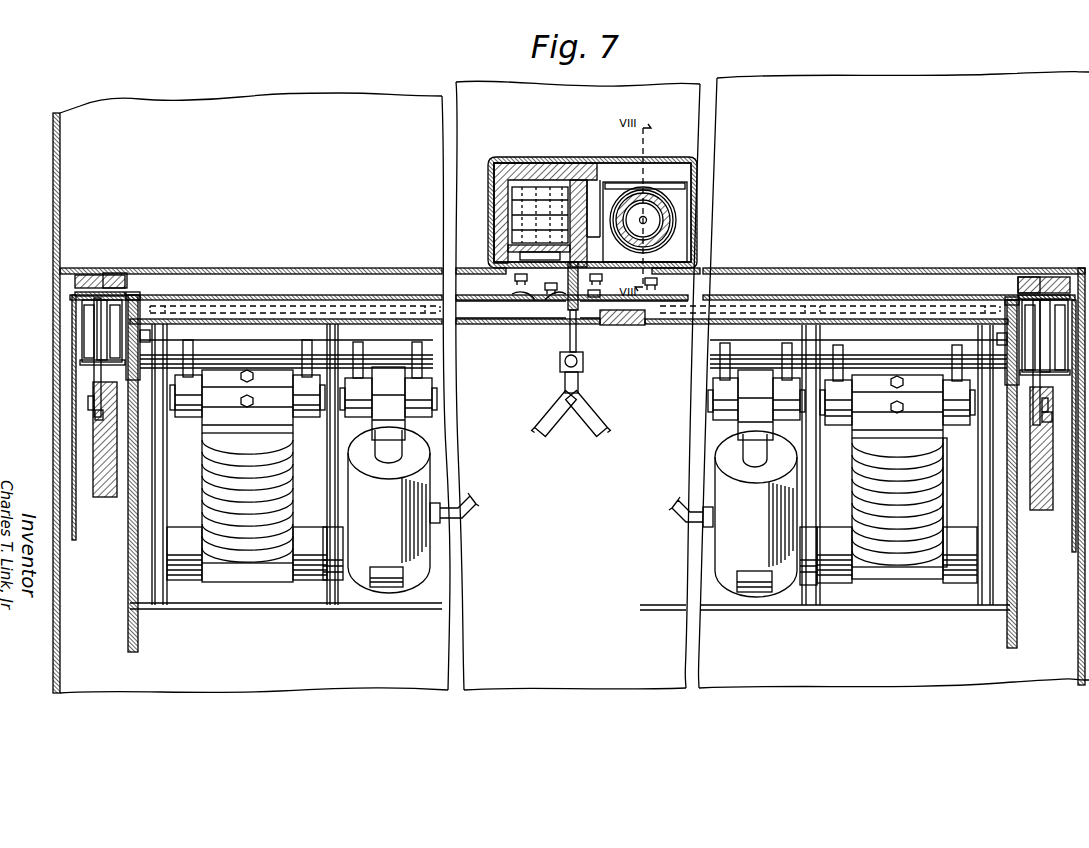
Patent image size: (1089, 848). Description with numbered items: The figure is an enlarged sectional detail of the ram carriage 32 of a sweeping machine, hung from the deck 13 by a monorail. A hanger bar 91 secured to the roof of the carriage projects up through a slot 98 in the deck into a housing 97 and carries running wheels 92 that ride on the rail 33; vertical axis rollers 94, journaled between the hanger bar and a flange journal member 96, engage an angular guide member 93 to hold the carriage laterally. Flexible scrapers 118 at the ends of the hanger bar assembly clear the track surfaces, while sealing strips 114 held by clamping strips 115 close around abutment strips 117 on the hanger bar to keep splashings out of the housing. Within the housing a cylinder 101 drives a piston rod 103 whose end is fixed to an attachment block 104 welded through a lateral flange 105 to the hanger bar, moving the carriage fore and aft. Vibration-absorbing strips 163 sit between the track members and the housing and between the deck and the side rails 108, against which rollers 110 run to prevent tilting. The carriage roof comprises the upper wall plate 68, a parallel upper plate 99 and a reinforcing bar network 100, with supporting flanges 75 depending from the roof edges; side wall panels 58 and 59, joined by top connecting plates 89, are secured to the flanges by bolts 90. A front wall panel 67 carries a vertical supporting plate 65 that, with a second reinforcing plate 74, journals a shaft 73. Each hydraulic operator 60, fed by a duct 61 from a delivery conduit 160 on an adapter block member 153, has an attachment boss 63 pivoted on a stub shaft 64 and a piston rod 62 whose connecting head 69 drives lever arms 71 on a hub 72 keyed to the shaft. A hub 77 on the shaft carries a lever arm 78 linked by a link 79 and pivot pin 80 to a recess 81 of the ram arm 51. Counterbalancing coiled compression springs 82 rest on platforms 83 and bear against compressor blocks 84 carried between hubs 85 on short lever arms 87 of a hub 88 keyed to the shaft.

The deck 13 is at (250, 267).
The carriage 32 is at (444, 610).
The rail 33 is at (514, 280).
The ram arm 51 is at (110, 498).
The side wall panel 58 is at (75, 542).
The side wall panel 59 is at (139, 650).
The hydraulic operator 60 is at (424, 553).
The hydraulic fluid supply and exhaust duct 61 is at (466, 510).
The piston rod 62 is at (752, 452).
The attachment boss 63 is at (757, 580).
The stub shaft 64 is at (362, 570).
The vertical supporting plate 65 is at (808, 492).
The front wall panel 67 is at (672, 612).
The upper wall plate 68 is at (618, 326).
The connecting head 69 is at (400, 428).
The lever arm 71 is at (745, 362).
The hub 72 is at (390, 337).
The shaft 73 is at (436, 358).
The vertical supporting and reinforcing plate 74 is at (947, 475).
The supporting flange 75 is at (138, 380).
The hub 77 is at (80, 361).
The lever arm 78 is at (110, 332).
The link 79 is at (95, 380).
The pivot pin 80 is at (88, 400).
The recess 81 is at (97, 416).
The coiled compression spring 82 is at (255, 556).
The platform 83 is at (280, 572).
The compressor block 84 is at (285, 428).
The hub 85 is at (840, 426).
The short lever arm 87 is at (194, 362).
The hub 88 is at (272, 325).
The top connecting plate 89 is at (140, 296).
The bolt 90 is at (151, 336).
The hanger bar 91 is at (588, 290).
The running wheel 92 is at (520, 256).
The guide member 93 is at (596, 178).
The roller 94 is at (510, 222).
The flange journal member 96 is at (512, 235).
The housing 97 is at (584, 158).
The slot 98 is at (658, 283).
The upper plate 99 is at (518, 318).
The reinforcing bar network 100 is at (490, 312).
The cylinder 101 is at (678, 207).
The piston rod 103 is at (662, 232).
The attachment block 104 is at (672, 182).
The lateral flange 105 is at (643, 178).
The rail 108 is at (120, 282).
The roller 110 is at (105, 290).
The sealing strip 114 is at (545, 286).
The clamping strip 115 is at (512, 296).
The abutment strip 117 is at (560, 297).
The flexible scraper 118 is at (499, 160).
The adapter block member 153 is at (562, 358).
The delivery conduit 160 is at (579, 384).
The vibration-absorbing strip 163 is at (118, 280).